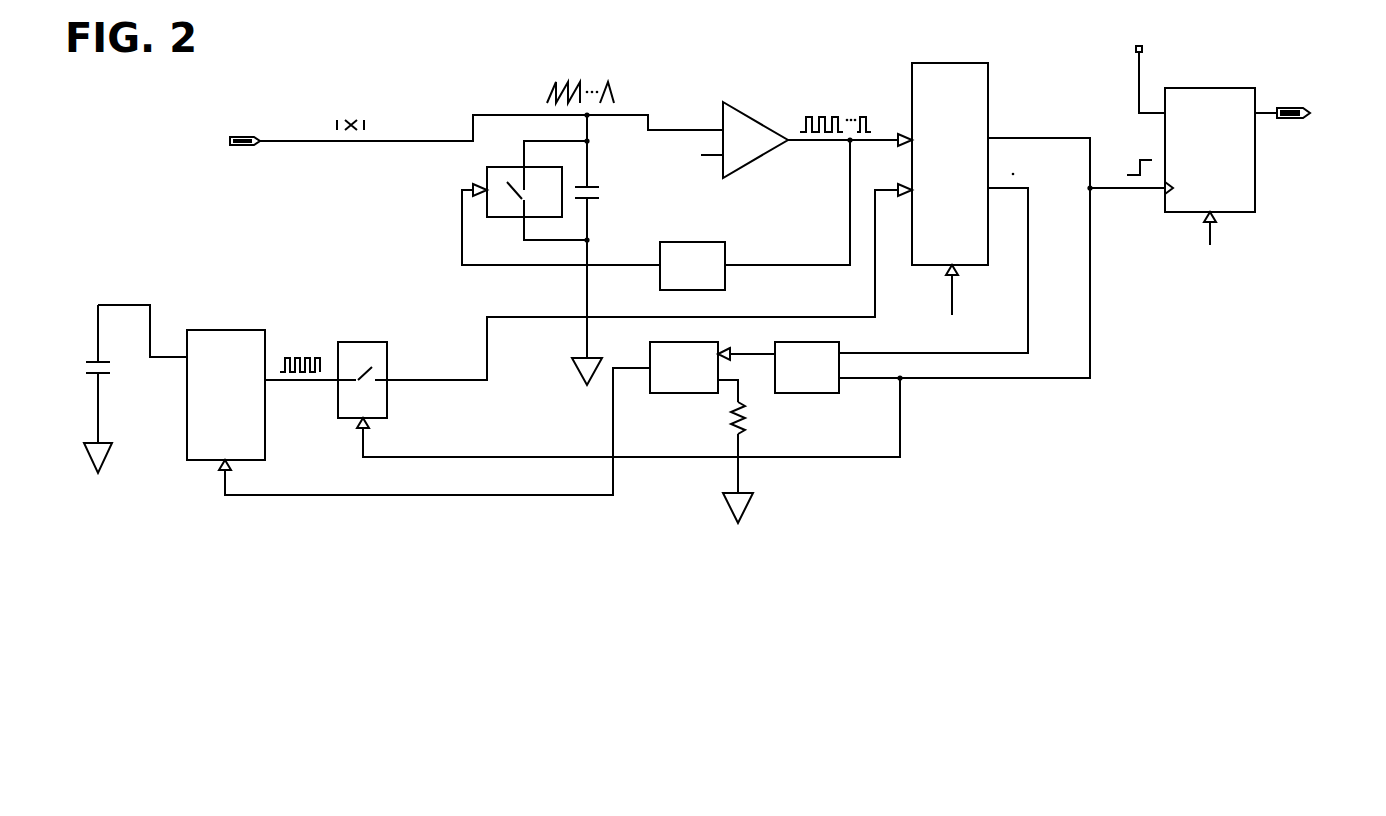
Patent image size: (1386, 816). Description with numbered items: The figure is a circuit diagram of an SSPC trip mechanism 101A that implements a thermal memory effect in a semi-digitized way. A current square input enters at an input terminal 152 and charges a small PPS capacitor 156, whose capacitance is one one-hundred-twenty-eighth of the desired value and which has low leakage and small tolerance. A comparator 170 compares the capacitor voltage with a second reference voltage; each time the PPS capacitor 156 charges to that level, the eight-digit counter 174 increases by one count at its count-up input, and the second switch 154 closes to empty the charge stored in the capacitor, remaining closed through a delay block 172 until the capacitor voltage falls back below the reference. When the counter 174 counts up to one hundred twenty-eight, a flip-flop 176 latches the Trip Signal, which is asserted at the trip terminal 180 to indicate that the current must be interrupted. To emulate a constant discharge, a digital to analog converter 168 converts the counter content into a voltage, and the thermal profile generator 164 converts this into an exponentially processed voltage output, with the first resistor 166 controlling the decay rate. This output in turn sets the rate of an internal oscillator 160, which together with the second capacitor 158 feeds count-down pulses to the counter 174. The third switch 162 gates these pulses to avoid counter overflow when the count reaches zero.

The SSPC trip mechanism 101A is at (718, 275).
The current square input 152 is at (247, 152).
The switch SW2 154 is at (506, 222).
The PPS capacitor 156 is at (590, 181).
The capacitor C2 158 is at (106, 386).
The internal oscillator 160 is at (220, 329).
The SW3 switch 162 is at (363, 340).
The thermal profile generator 164 is at (680, 397).
The resistor R1 166 is at (748, 431).
The digital to analog converter 168 is at (810, 396).
The comparator 170 is at (762, 119).
The delay block 172 is at (732, 248).
The 8-digit counter 174 is at (995, 92).
The D flip-flop 176 is at (1205, 87).
The Trip Signal terminal 180 is at (1297, 123).